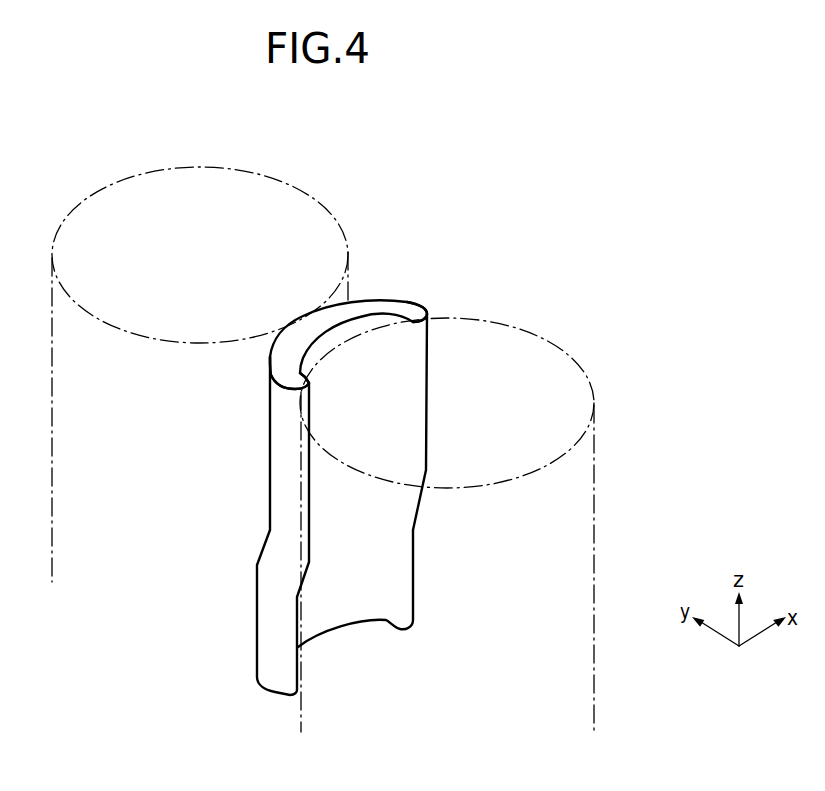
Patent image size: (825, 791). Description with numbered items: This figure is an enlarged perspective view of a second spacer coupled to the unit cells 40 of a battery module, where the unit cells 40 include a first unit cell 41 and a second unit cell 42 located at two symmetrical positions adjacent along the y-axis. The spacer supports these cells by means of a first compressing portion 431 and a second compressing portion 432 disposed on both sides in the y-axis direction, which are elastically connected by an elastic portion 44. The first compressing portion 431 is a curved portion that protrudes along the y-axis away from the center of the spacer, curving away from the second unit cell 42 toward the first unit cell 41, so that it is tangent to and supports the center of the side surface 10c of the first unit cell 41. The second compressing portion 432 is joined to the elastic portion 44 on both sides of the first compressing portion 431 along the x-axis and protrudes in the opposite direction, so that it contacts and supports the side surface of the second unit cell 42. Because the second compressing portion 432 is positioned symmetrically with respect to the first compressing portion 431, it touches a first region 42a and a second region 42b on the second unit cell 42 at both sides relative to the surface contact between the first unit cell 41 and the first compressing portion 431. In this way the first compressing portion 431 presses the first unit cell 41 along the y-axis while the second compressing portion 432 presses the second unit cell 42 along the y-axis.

The unit cells 40 is at (693, 193).
The first unit cell 41 is at (308, 200).
The second unit cell 42 is at (558, 347).
The elastic portion 44 is at (345, 317).
The first compressing portion 431 is at (300, 318).
The second compressing portion 432 is at (413, 313).
The first region 42a is at (415, 375).
The second region 42b is at (332, 407).
The side surface 10c is at (217, 390).